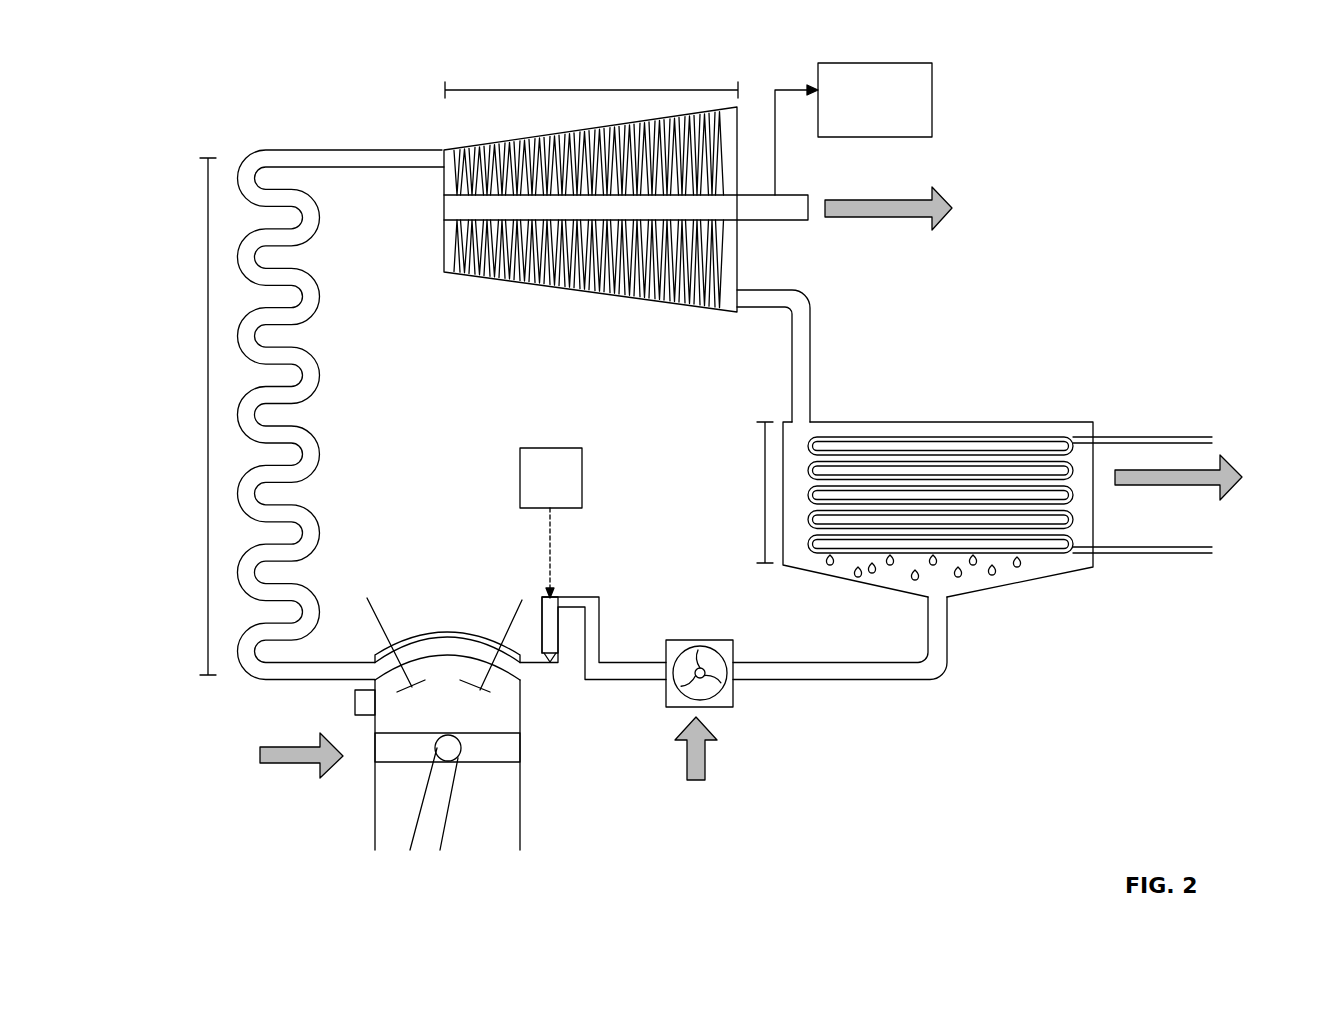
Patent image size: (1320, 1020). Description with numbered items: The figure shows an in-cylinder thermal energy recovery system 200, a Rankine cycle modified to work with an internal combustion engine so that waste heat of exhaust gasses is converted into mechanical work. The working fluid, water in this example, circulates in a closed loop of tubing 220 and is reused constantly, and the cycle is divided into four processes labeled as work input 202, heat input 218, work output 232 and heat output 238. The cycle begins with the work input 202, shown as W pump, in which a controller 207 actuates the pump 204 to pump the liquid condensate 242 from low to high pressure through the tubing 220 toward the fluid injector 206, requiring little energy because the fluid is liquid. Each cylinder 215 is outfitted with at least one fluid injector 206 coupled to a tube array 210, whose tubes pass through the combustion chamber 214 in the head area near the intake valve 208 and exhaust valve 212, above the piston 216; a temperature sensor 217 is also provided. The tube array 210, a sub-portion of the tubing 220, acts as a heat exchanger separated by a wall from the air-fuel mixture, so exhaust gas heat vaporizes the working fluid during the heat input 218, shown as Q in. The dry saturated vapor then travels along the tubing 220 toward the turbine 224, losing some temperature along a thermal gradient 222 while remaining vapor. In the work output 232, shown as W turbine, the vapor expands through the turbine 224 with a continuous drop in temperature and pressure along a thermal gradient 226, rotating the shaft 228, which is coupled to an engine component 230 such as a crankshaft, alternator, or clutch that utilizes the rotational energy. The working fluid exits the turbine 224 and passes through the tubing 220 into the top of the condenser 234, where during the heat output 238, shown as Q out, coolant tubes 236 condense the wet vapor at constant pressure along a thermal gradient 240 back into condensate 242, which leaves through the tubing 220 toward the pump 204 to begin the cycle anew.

The in-cylinder thermal energy recovery system 200 is at (190, 100).
The work input 202 is at (710, 744).
The pump 204 is at (728, 640).
The fluid injector 206 is at (557, 597).
The controller 207 is at (535, 448).
The intake valve 208 is at (522, 600).
The tube array 210 is at (416, 640).
The exhaust valve 212 is at (367, 598).
The combustion chamber 214 is at (467, 721).
The cylinder 215 is at (546, 716).
The piston 216 is at (520, 755).
The temperature sensor 217 is at (355, 702).
The heat input 218 is at (316, 745).
The tubing 220 is at (317, 450).
The thermal gradient 222 is at (208, 268).
The turbine 224 is at (584, 289).
The thermal gradient 226 is at (683, 90).
The shaft 228 is at (777, 222).
The engine component 230 is at (853, 129).
The work output 232 is at (948, 226).
The condenser 234 is at (1079, 422).
The coolant tubes 236 is at (1183, 437).
The heat output 238 is at (1236, 489).
The thermal gradient 240 is at (764, 447).
The condensate 242 is at (957, 588).